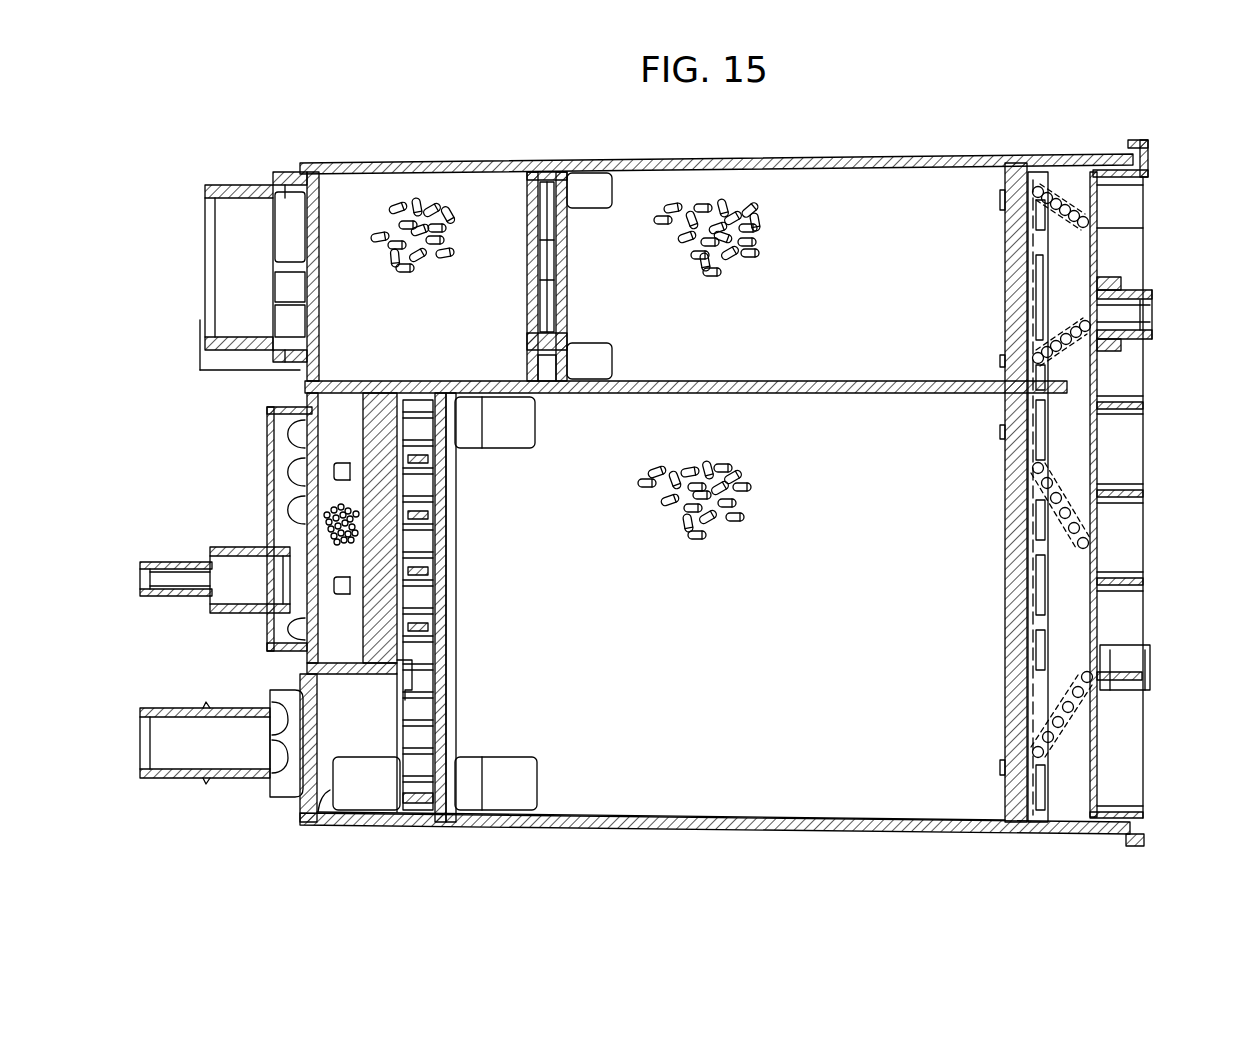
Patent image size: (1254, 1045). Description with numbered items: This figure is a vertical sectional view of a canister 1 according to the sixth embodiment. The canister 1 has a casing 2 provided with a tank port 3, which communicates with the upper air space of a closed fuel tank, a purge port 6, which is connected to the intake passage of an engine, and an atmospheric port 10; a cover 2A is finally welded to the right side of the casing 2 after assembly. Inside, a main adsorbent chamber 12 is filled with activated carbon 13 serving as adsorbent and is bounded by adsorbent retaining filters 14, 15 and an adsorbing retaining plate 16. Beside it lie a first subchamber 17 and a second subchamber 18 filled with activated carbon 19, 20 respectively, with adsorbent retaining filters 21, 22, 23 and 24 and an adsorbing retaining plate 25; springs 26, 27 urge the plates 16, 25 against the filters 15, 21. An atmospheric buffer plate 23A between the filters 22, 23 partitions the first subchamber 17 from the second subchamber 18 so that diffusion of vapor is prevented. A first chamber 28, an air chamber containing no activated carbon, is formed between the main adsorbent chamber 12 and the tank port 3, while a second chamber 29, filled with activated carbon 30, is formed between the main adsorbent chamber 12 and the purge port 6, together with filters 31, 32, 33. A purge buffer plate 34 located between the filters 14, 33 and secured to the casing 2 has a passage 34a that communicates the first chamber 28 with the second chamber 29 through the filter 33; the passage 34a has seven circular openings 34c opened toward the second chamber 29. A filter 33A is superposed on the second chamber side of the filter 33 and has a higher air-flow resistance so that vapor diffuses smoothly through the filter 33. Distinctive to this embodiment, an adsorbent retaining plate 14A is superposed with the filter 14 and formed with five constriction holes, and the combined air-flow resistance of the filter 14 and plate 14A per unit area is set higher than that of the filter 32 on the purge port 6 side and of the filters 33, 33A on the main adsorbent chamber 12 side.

The canister 1 is at (943, 150).
The casing 2 is at (868, 158).
The cover 2A is at (1145, 828).
The tank port 3 is at (180, 780).
The purge port 6 is at (150, 565).
The atmospheric port 10 is at (207, 183).
The main adsorbent chamber 12 is at (808, 732).
The activated carbon 13 is at (700, 538).
The adsorbent retaining filter 14 is at (452, 680).
The adsorbent retaining plate 14A is at (455, 638).
The adsorbent retaining filter 15 is at (1002, 806).
The adsorbing retaining plate 16 is at (1052, 806).
The first subchamber 17 is at (875, 244).
The second subchamber 18 is at (466, 195).
The activated carbon 19 is at (760, 256).
The activated carbon 20 is at (418, 205).
The adsorbent retaining filter 21 is at (1005, 300).
The adsorbent retaining filter 22 is at (568, 215).
The adsorbent retaining filter 23 is at (530, 215).
The atmospheric buffer plate 23A is at (547, 237).
The adsorbent retaining filter 24 is at (318, 210).
The adsorbing retaining plate 25 is at (1053, 170).
The spring 26 is at (1070, 712).
The spring 27 is at (1098, 205).
The first chamber 28 is at (374, 731).
The second chamber 29 is at (330, 435).
The activated carbon 30 is at (335, 513).
The filter 31 is at (330, 812).
The filter 32 is at (308, 565).
The filter 33 is at (365, 493).
The filter 33A is at (348, 396).
The purge buffer plate 34 is at (469, 644).
The passage 34a is at (422, 545).
The circular openings 34c is at (422, 495).